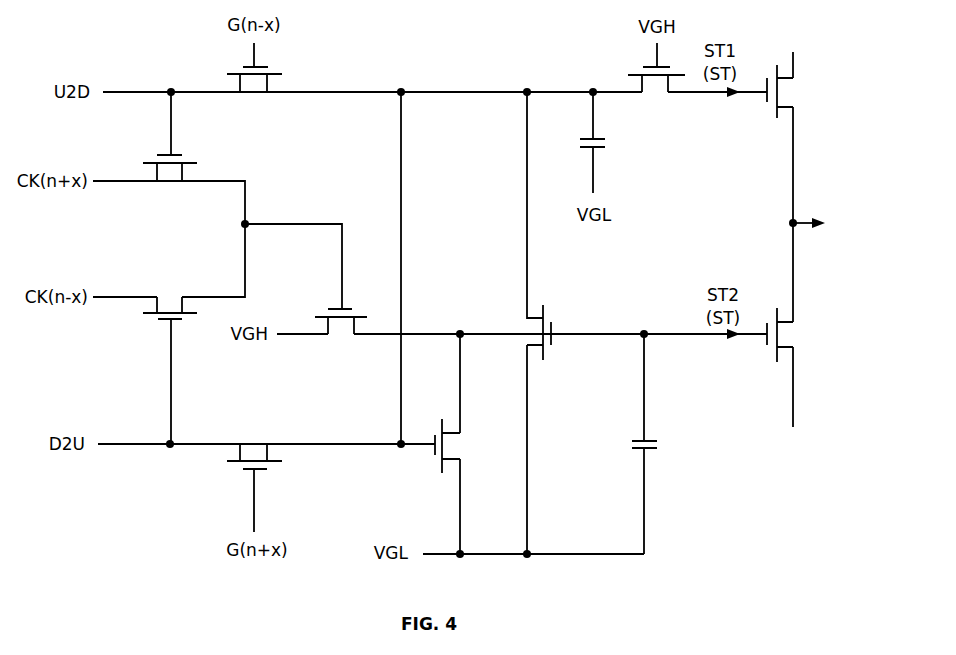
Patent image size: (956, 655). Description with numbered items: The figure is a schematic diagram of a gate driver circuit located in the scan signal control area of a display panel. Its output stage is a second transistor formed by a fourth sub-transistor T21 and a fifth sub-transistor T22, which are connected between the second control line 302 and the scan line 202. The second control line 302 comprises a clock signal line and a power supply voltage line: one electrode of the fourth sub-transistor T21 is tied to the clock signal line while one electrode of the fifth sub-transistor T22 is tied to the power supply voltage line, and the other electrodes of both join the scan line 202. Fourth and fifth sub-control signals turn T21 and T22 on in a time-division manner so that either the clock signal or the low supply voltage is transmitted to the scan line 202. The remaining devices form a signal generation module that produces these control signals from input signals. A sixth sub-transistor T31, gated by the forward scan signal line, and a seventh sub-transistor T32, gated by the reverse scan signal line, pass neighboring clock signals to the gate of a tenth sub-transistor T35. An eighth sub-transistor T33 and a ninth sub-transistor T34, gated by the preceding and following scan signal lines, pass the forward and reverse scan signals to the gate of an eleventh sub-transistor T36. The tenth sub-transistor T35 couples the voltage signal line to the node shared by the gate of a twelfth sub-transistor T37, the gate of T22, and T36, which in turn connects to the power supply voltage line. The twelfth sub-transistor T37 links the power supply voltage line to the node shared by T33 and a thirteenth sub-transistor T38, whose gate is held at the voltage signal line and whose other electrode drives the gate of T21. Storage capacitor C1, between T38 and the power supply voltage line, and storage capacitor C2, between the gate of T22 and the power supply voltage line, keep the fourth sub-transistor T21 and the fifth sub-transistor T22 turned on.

The scan line 202 is at (826, 223).
The second control line 302 is at (792, 243).
The fourth sub-transistor T21 is at (803, 144).
The fifth sub-transistor T22 is at (802, 292).
The sixth sub-transistor T31 is at (170, 192).
The seventh sub-transistor T32 is at (170, 284).
The eighth sub-transistor T33 is at (254, 102).
The ninth sub-transistor T34 is at (254, 432).
The tenth sub-transistor T35 is at (341, 346).
The eleventh sub-transistor T36 is at (469, 446).
The twelfth sub-transistor T37 is at (518, 324).
The thirteenth sub-transistor T38 is at (656, 102).
The storage capacitor C1 is at (605, 142).
The storage capacitor C2 is at (631, 444).